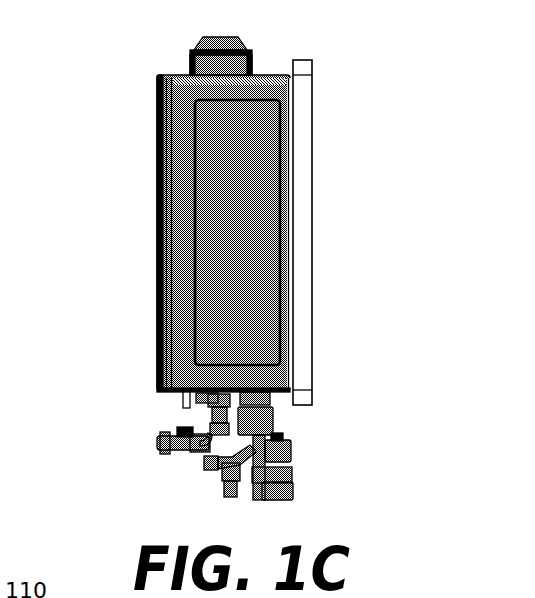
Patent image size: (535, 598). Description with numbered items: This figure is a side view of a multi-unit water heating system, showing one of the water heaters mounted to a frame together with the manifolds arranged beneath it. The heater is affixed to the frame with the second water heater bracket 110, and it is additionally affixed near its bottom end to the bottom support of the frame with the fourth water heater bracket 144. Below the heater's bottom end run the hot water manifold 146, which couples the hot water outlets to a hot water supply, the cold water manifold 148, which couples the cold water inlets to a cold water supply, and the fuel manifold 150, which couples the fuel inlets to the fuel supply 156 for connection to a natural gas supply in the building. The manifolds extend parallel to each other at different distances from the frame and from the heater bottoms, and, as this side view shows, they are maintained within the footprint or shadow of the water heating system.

The second water heater bracket 110 is at (289, 82).
The fourth water heater bracket 144 is at (292, 388).
The hot water manifold 146 is at (222, 437).
The cold water manifold 148 is at (240, 447).
The fuel manifold 150 is at (288, 443).
The fuel supply 156 is at (288, 505).